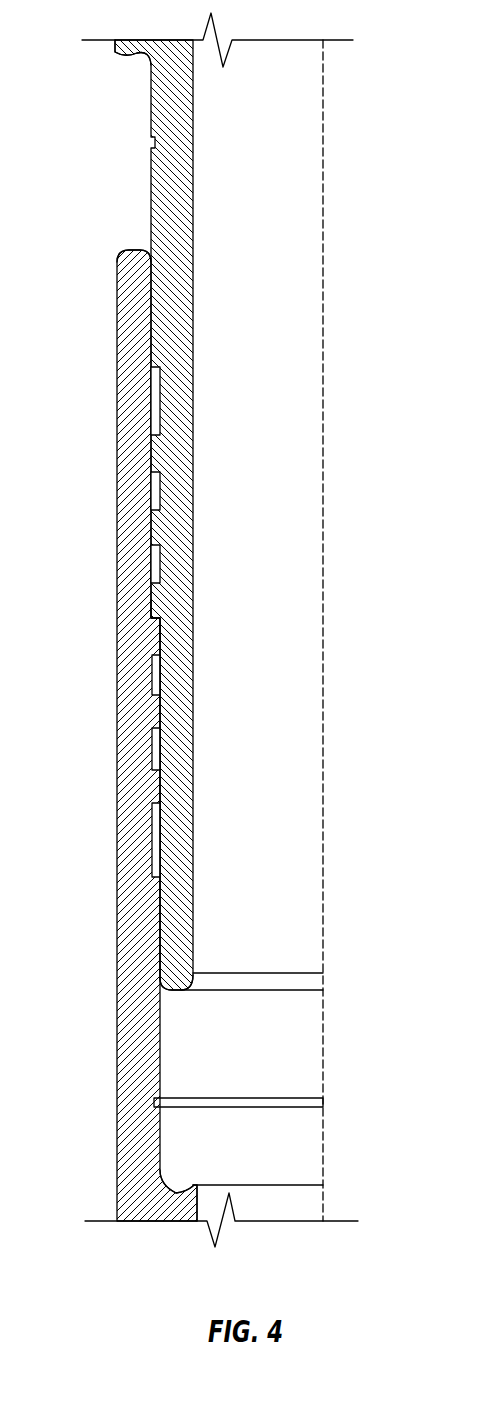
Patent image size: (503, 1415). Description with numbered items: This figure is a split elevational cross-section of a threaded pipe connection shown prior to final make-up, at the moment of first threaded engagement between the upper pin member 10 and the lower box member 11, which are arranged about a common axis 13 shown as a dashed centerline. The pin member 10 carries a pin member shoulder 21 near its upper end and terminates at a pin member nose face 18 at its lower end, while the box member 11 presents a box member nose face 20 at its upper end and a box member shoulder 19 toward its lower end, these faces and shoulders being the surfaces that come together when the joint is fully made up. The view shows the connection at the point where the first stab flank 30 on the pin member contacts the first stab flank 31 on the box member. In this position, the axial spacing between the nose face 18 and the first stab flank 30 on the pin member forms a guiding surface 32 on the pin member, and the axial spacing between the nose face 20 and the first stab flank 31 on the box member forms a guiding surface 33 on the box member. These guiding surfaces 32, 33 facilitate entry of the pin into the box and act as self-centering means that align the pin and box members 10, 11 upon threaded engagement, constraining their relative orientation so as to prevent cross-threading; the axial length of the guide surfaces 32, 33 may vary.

The pin member 10 is at (117, 46).
The box member 11 is at (117, 940).
The axis 13 is at (323, 148).
The pin member nose face 18 is at (177, 990).
The box member shoulder 19 is at (177, 1193).
The box member nose face 20 is at (133, 250).
The pin member shoulder 21 is at (138, 40).
The first stab flank on the pin member 30 is at (153, 618).
The first stab flank on the box member 31 is at (160, 622).
The guiding surface on the pin member 32 is at (163, 677).
The guiding surface on the box member 33 is at (148, 393).